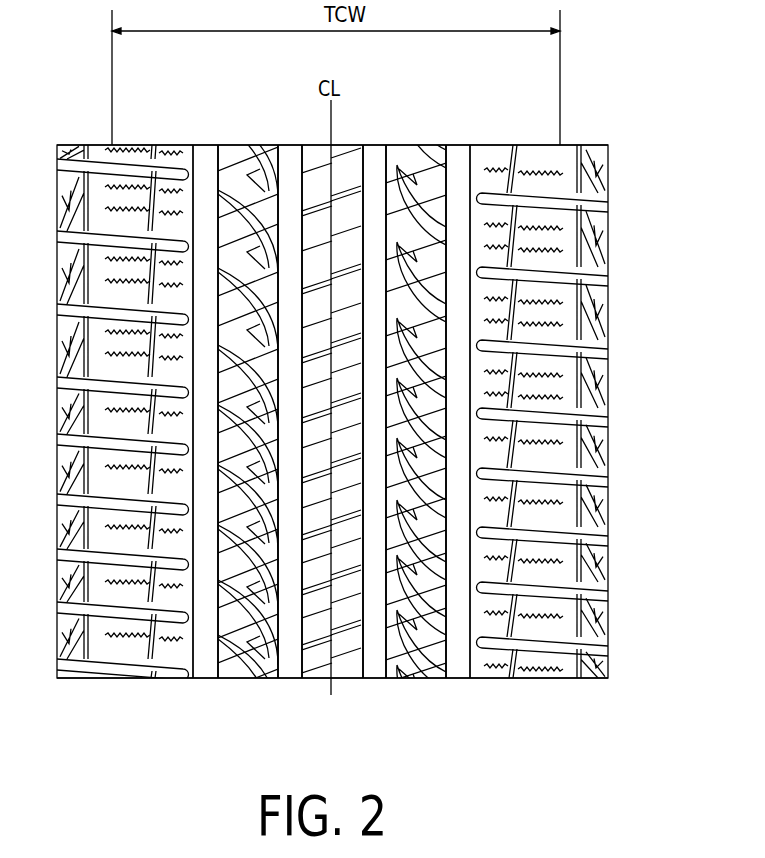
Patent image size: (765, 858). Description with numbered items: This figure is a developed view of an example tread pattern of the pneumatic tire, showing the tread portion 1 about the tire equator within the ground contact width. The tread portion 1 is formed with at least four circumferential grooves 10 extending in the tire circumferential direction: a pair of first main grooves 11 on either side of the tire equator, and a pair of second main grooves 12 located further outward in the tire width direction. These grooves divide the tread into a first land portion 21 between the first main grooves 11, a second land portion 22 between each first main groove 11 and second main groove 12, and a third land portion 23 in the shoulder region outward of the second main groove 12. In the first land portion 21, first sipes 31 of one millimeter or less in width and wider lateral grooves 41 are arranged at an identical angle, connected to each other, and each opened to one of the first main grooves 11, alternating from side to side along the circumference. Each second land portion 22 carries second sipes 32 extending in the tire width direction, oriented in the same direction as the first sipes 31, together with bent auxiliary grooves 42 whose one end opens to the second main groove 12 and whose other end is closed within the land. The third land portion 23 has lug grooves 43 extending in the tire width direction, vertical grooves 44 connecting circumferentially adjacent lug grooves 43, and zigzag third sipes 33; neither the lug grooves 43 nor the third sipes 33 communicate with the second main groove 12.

The tread portion 1 is at (576, 146).
The circumferential grooves 10 is at (200, 64).
The first main grooves 11 is at (291, 157).
The second main grooves 12 is at (203, 157).
The first land portion 21 is at (363, 697).
The second land portion 22 is at (218, 697).
The third land portion 23 is at (63, 697).
The first sipes 31 is at (317, 157).
The second sipes 32 is at (230, 157).
The third sipes 33 is at (108, 157).
The lateral grooves 41 is at (358, 155).
The auxiliary grooves 42 is at (253, 157).
The lug grooves 43 is at (137, 160).
The vertical grooves 44 is at (170, 158).